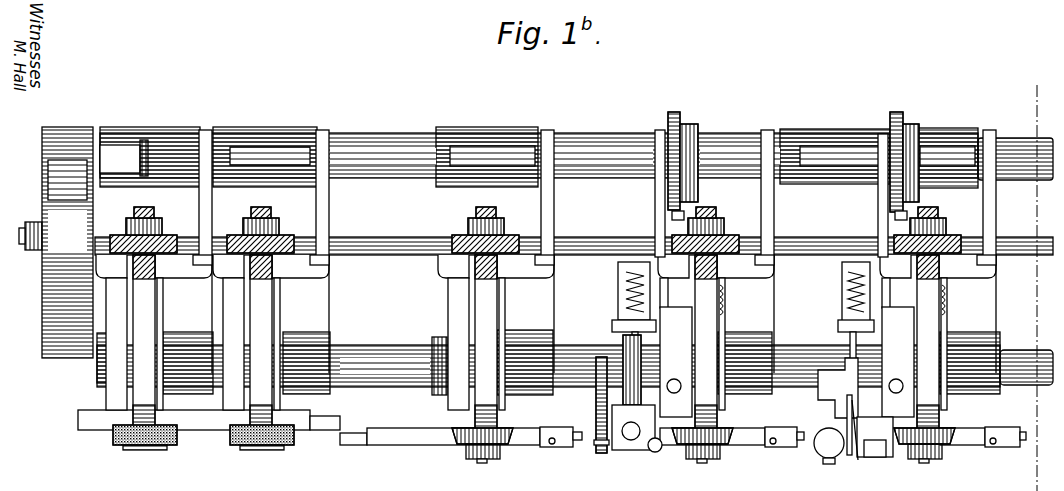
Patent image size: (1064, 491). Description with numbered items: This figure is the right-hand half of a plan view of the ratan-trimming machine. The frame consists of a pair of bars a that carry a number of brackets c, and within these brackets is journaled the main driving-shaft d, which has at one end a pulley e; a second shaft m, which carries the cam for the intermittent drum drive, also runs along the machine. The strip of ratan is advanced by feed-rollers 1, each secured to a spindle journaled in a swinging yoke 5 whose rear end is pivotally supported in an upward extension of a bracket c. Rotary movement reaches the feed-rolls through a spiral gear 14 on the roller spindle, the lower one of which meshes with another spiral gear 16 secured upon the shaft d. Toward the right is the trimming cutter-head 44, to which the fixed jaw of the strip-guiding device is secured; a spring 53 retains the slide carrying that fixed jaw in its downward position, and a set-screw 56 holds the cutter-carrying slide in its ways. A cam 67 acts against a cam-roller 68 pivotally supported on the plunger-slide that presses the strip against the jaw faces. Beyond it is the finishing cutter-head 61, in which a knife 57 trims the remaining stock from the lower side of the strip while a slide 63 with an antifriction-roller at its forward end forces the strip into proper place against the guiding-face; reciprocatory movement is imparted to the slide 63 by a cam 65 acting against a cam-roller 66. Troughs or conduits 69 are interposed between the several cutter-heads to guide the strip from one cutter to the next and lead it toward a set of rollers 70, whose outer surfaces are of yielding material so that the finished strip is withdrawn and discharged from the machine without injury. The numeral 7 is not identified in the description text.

The feed-roller 1 is at (501, 441).
The swinging yoke 5 is at (958, 320).
The shaft end 7 is at (24, 236).
The spiral gear 14 is at (120, 233).
The spiral gear 16 is at (162, 218).
The head 44 is at (855, 359).
The spring 53 is at (850, 455).
The set-screw 56 is at (823, 452).
The knife 57 is at (597, 447).
The cutter-head 61 is at (649, 301).
The slide 63 is at (628, 385).
The cam 65 is at (673, 112).
The cam-roller 66 is at (679, 216).
The cam 67 is at (896, 112).
The cam-roller 68 is at (902, 217).
The trough or conduit 69 is at (408, 437).
The rollers 70 is at (166, 445).
The bar a is at (374, 353).
The bracket c is at (166, 298).
The main driving-shaft d is at (583, 236).
The pulley e is at (67, 242).
The shaft m is at (815, 156).